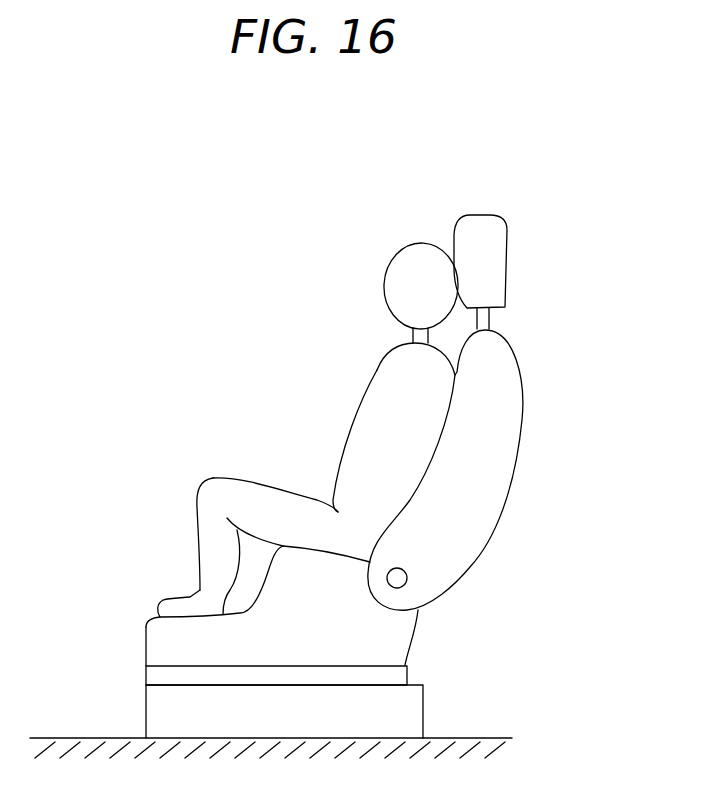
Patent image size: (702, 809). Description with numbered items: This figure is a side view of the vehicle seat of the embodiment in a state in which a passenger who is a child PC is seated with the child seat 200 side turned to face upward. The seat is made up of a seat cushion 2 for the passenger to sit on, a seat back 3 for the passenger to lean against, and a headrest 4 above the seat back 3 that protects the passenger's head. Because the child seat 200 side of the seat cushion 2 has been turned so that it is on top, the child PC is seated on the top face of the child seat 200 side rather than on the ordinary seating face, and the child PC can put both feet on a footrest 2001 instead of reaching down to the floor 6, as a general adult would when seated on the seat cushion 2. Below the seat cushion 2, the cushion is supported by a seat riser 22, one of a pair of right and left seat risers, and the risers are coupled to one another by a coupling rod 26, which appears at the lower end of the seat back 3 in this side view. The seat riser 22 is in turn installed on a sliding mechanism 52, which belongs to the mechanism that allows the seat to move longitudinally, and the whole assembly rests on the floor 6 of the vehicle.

The child PC is at (385, 383).
The headrest 4 is at (497, 262).
The seat back 3 is at (507, 420).
The coupling rod 26 is at (397, 578).
The seat cushion 2 is at (393, 637).
The child seat 200 is at (295, 543).
The footrest 2001 is at (177, 600).
The seat riser 22 is at (402, 675).
The sliding mechanism 52 is at (415, 710).
The floor 6 is at (63, 738).